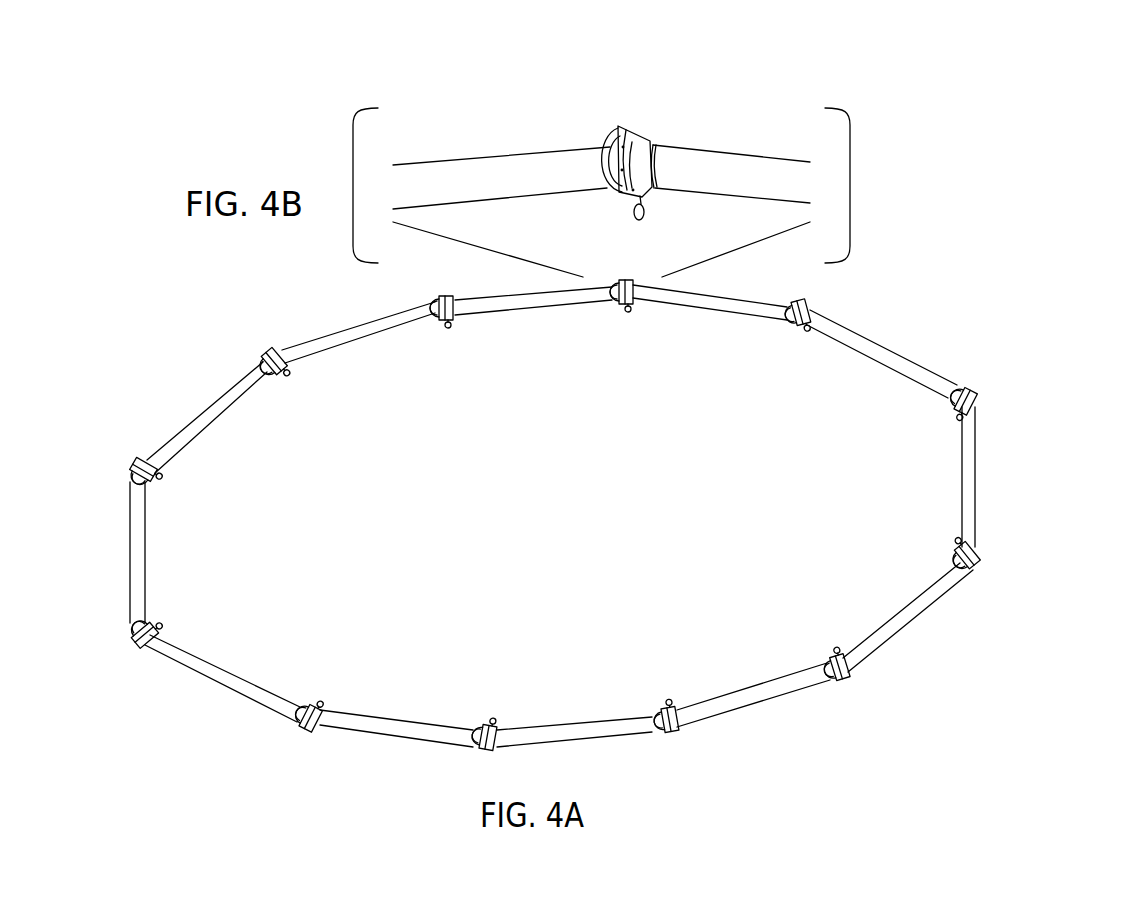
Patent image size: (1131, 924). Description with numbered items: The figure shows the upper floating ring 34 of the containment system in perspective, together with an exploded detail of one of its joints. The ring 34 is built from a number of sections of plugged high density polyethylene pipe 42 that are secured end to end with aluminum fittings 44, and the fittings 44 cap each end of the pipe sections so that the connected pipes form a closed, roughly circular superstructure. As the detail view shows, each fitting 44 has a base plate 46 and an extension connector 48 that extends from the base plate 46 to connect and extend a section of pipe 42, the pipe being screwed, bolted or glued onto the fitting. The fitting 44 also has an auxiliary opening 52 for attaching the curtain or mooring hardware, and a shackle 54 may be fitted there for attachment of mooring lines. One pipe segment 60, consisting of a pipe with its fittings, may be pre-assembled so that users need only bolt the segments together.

In FIG. 4A, the floating ring 34 is at (578, 496).
In FIG. 4A, the pipe 42 is at (230, 682).
In FIG. 4B, the fitting 44 is at (617, 137).
In FIG. 4A, the fitting 44 is at (832, 660).
In FIG. 4B, the base plate 46 is at (640, 157).
In FIG. 4B, the extension connector 48 is at (653, 148).
In FIG. 4B, the auxiliary opening 52 is at (607, 163).
In FIG. 4B, the shackle 54 is at (644, 217).
In FIG. 4A, the pipe segment 60 is at (975, 370).